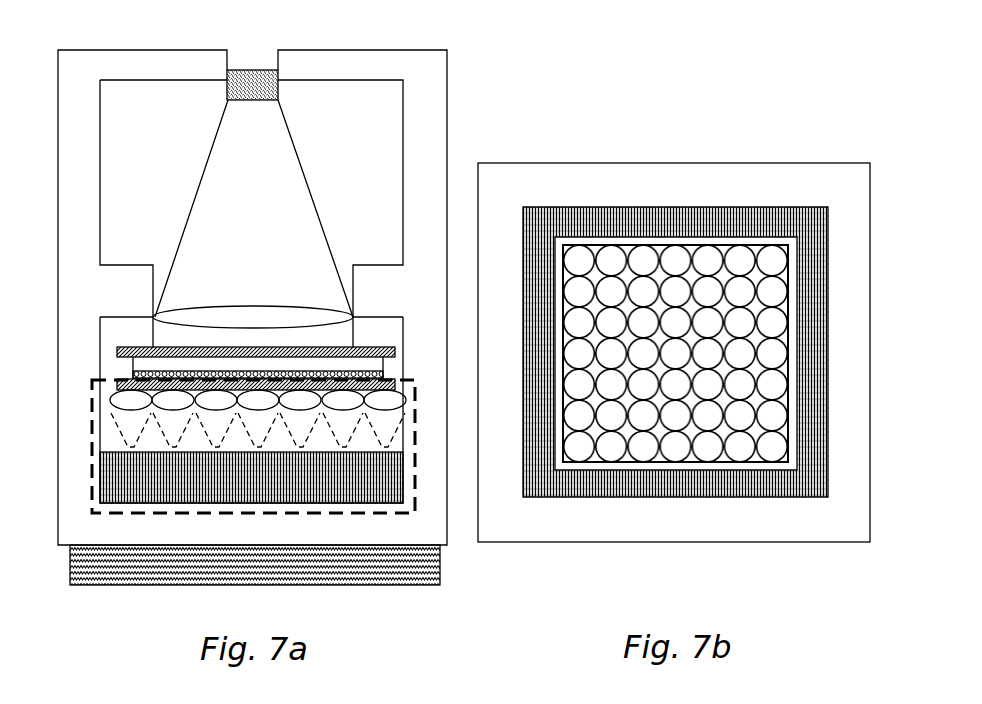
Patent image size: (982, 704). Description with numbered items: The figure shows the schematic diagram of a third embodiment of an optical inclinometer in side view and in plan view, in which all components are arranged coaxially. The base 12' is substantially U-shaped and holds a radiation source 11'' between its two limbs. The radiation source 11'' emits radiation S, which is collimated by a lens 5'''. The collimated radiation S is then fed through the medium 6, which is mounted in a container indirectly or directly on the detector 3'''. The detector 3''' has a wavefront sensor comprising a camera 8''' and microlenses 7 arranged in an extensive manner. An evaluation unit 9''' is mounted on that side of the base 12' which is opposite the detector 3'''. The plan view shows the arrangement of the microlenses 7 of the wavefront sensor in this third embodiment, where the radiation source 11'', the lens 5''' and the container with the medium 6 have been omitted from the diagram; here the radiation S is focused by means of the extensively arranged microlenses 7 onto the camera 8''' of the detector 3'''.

In FIG. 7A, the base 12' is at (345, 293).
In FIG. 7B, the base 12' is at (674, 291).
In FIG. 7A, the radiation source 11'' is at (190, 54).
In FIG. 7A, the radiation S is at (252, 208).
In FIG. 7A, the lens 5''' is at (253, 270).
In FIG. 7A, the medium 6 is at (370, 372).
In FIG. 7A, the microlenses 7 is at (130, 397).
In FIG. 7B, the microlenses 7 is at (737, 263).
In FIG. 7A, the detector 3''' is at (220, 526).
In FIG. 7A, the camera 8''' is at (318, 522).
In FIG. 7B, the camera 8''' is at (668, 400).
In FIG. 7A, the evaluation unit 9''' is at (274, 595).